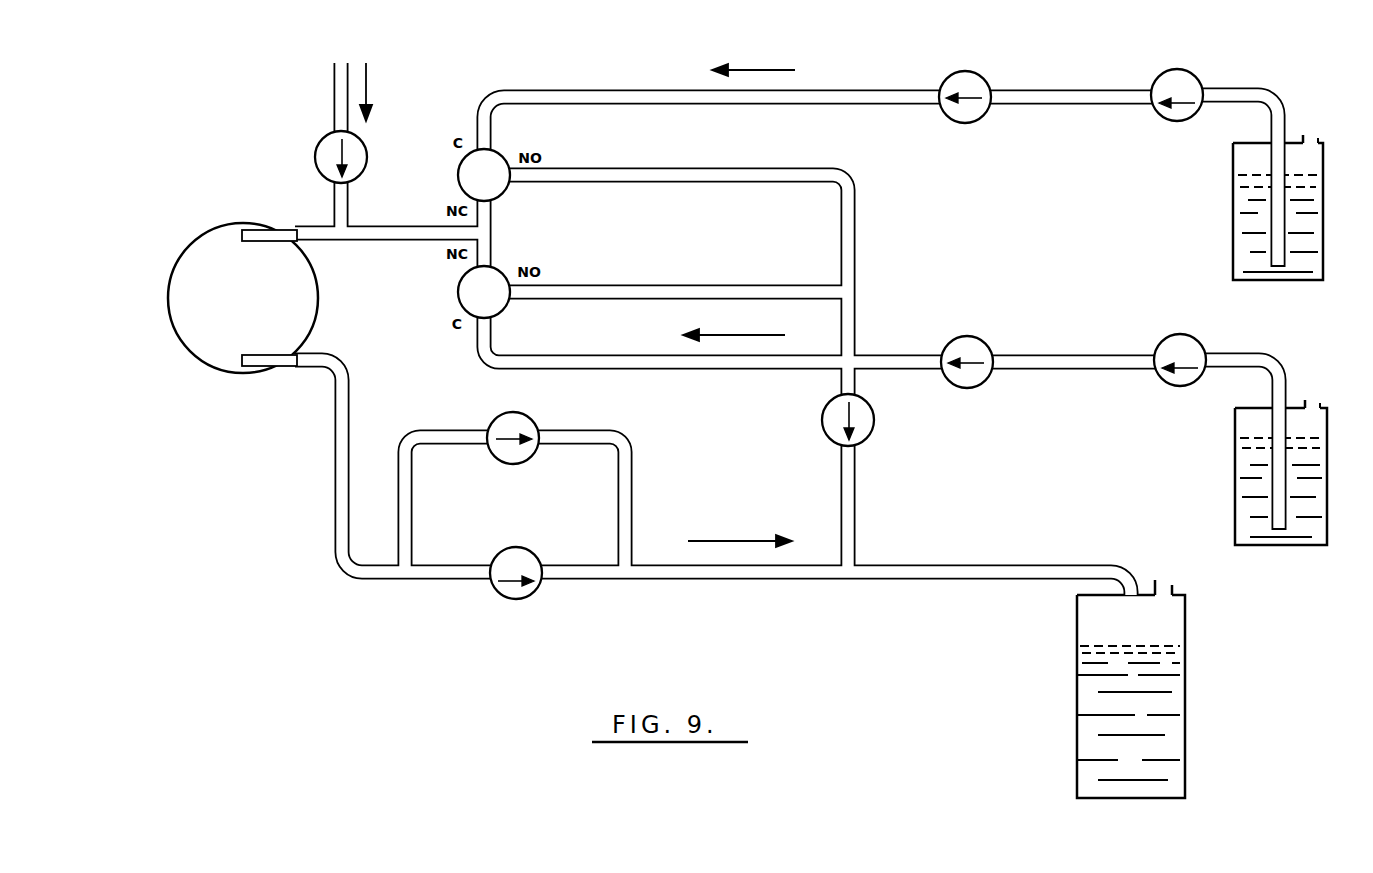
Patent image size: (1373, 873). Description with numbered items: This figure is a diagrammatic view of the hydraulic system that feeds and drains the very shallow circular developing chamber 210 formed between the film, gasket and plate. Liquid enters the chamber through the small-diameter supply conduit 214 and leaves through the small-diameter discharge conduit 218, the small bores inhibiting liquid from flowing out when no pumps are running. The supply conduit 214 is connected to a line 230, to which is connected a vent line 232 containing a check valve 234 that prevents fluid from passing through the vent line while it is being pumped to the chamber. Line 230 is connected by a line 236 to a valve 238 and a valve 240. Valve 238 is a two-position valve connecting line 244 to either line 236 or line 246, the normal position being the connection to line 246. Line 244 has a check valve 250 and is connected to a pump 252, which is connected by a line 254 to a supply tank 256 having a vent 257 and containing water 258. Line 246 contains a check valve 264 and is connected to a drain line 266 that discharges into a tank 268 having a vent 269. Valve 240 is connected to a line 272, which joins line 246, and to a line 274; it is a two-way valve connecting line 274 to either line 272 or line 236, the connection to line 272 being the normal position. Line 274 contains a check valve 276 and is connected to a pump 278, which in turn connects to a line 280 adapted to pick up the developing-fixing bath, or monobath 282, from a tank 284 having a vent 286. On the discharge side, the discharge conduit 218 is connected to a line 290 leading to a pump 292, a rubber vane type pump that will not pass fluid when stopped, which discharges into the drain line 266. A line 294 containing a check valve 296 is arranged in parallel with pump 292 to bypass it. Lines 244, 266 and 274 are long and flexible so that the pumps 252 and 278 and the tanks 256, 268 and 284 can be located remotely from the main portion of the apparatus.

The developing chamber 210 is at (268, 313).
The supply conduit 214 is at (258, 229).
The discharge conduit 218 is at (265, 367).
The line 230 is at (322, 243).
The vent line 232 is at (349, 202).
The check valve 234 is at (367, 142).
The line 236 is at (492, 204).
The valve 238 is at (496, 152).
The valve 240 is at (502, 312).
The line 244 is at (527, 92).
The line 246 is at (856, 225).
The check valve 250 is at (985, 79).
The pump 252 is at (1196, 80).
The line 254 is at (1287, 111).
The supply tank 256 is at (1233, 205).
The vent 257 is at (1318, 138).
The water 258 is at (1245, 258).
The check valve 264 is at (873, 435).
The drain line 266 is at (937, 563).
The tank 268 is at (1077, 710).
The vent 269 is at (1172, 585).
The line 272 is at (675, 282).
The line 274 is at (665, 372).
The check valve 276 is at (978, 340).
The pump 278 is at (1200, 341).
The line 280 is at (1288, 382).
The developing-fixing bath (monobath) 282 is at (1248, 492).
The tank 284 is at (1235, 458).
The vent 286 is at (1320, 403).
The line 290 is at (349, 393).
The pump 292 is at (502, 598).
The line 294 is at (429, 430).
The check valve 296 is at (528, 416).